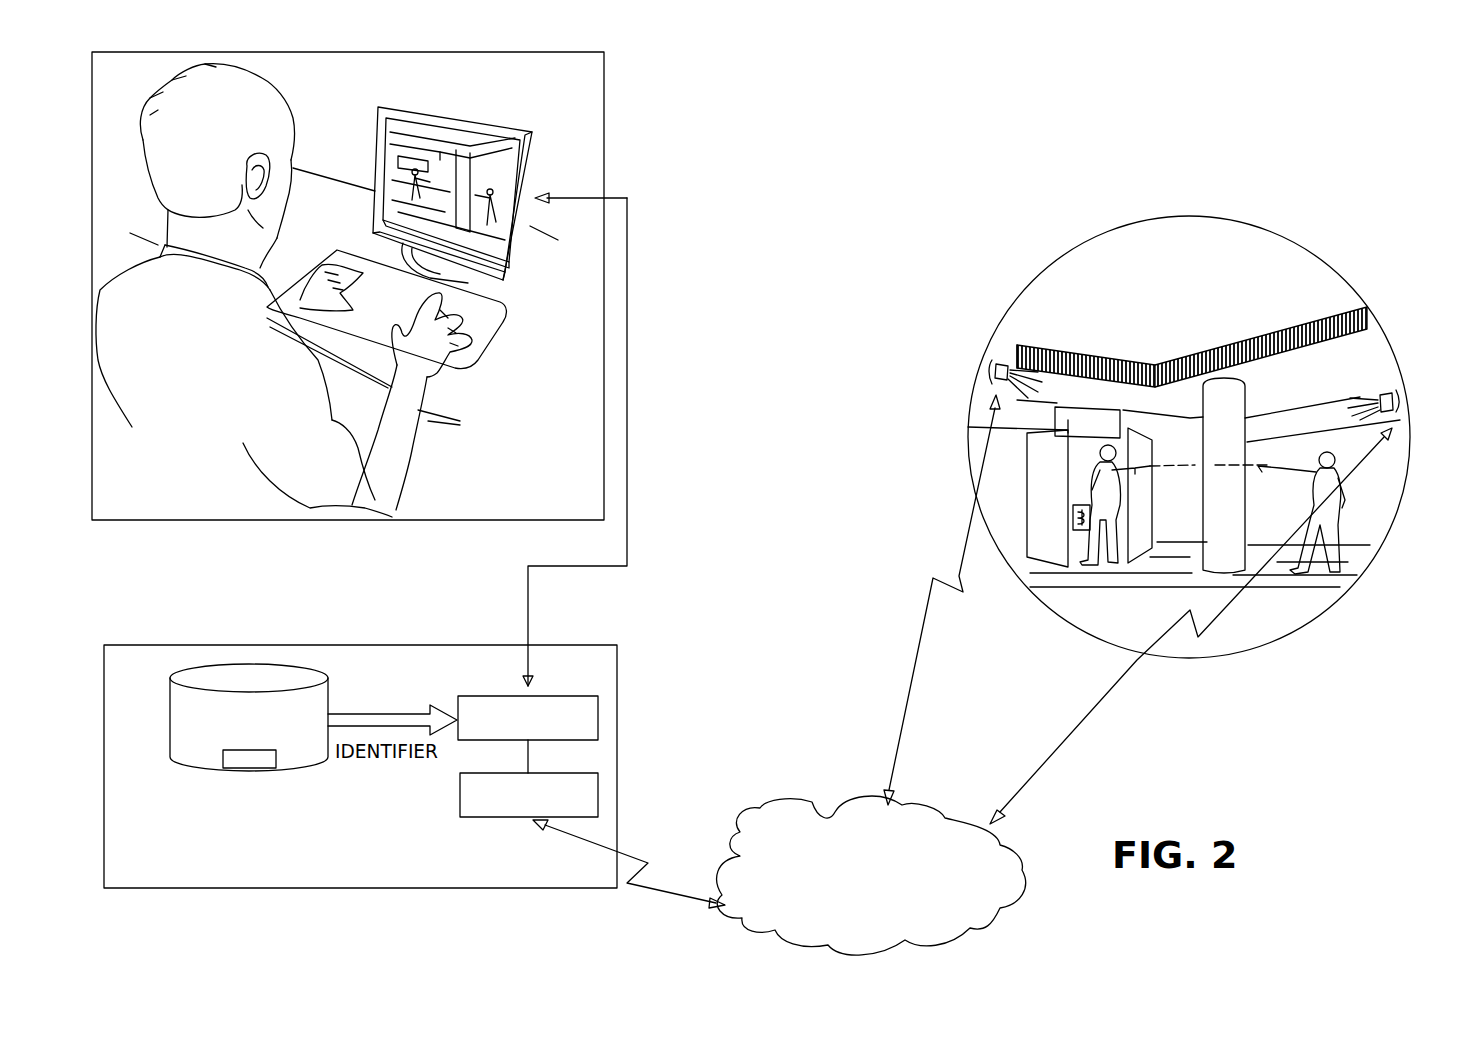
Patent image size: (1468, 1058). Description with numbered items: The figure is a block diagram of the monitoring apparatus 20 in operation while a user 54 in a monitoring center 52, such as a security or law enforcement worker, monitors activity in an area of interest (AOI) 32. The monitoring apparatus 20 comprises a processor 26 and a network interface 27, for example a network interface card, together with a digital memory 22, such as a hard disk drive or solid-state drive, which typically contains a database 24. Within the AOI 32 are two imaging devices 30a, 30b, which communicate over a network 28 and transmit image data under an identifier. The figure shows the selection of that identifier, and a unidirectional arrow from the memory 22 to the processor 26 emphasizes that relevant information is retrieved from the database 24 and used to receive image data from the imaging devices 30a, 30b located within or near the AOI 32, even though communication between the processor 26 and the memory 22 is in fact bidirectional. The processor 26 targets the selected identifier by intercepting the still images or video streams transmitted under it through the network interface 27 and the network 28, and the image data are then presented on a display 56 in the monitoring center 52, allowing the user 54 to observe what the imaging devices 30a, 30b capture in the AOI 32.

The monitoring apparatus 20 is at (403, 645).
The digital memory 22 is at (170, 705).
The database 24 is at (257, 762).
The processor 26 is at (473, 694).
The network interface 27 is at (503, 818).
The network 28 is at (782, 832).
The imaging device 30a is at (992, 372).
The imaging device 30b is at (1396, 388).
The area of interest (AOI) 32 is at (1028, 288).
The monitoring center 52 is at (604, 118).
The user 54 is at (146, 135).
The display 56 is at (489, 125).